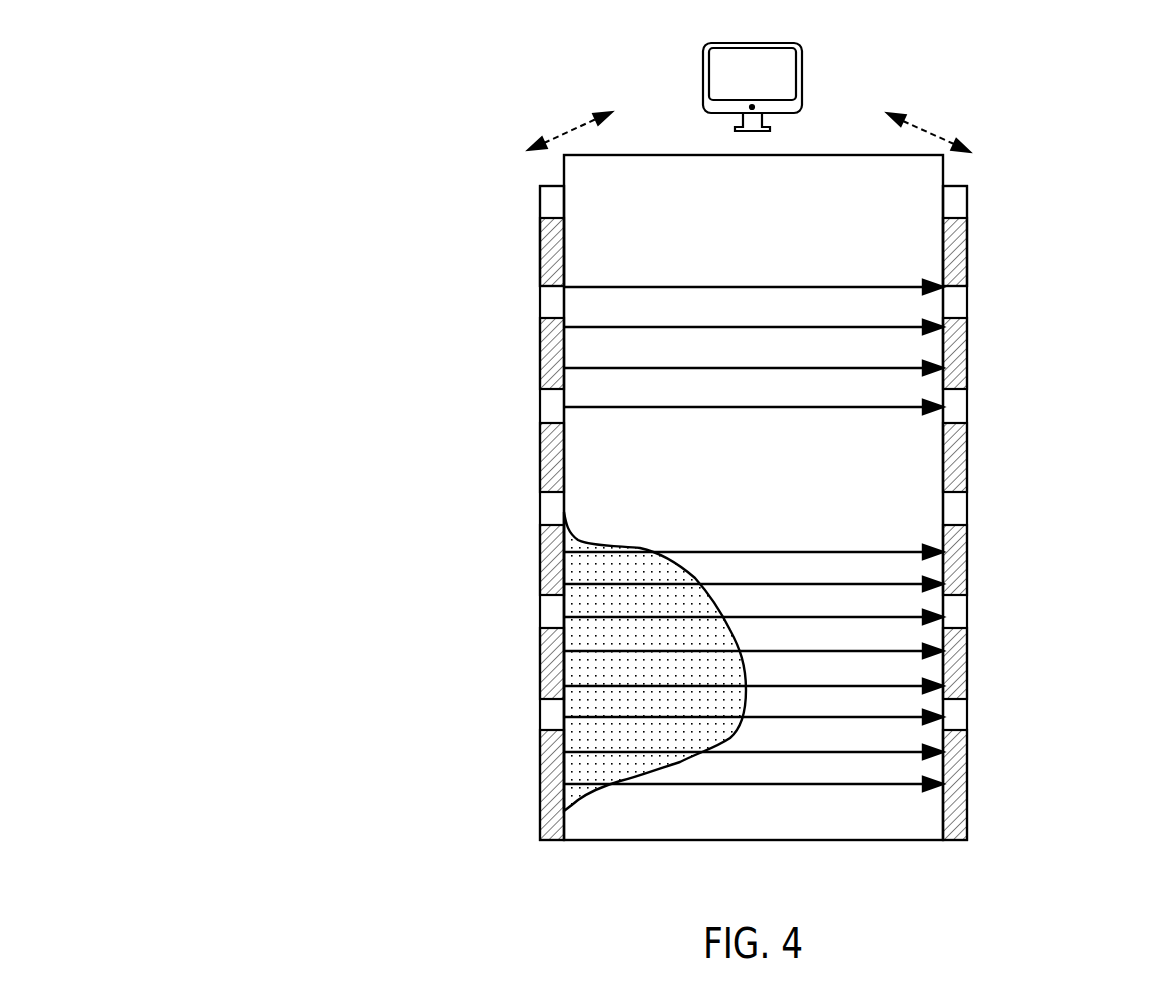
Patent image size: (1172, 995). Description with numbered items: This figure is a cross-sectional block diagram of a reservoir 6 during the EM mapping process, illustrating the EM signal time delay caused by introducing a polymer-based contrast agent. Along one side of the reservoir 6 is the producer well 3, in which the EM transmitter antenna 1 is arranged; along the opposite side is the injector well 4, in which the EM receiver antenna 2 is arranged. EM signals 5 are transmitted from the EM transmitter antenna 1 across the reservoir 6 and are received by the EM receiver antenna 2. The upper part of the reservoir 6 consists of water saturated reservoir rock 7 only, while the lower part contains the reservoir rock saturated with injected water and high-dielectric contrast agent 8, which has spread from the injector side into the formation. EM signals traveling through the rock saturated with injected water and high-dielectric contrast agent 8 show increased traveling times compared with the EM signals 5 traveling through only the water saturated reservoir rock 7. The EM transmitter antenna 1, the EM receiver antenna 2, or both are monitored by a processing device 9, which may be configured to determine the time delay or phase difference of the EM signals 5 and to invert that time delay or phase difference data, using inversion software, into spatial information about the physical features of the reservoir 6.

The EM transmitter antenna 1 is at (540, 200).
The EM receiver antenna 2 is at (967, 200).
The producer well 3 is at (549, 842).
The injector well 4 is at (955, 842).
The EM signals 5 is at (845, 418).
The reservoir 6 is at (673, 842).
The water saturated reservoir rock 7 is at (585, 466).
The reservoir rock saturated with injected water and high-dielectric contrast agent 8 is at (578, 673).
The processing device 9 is at (802, 65).